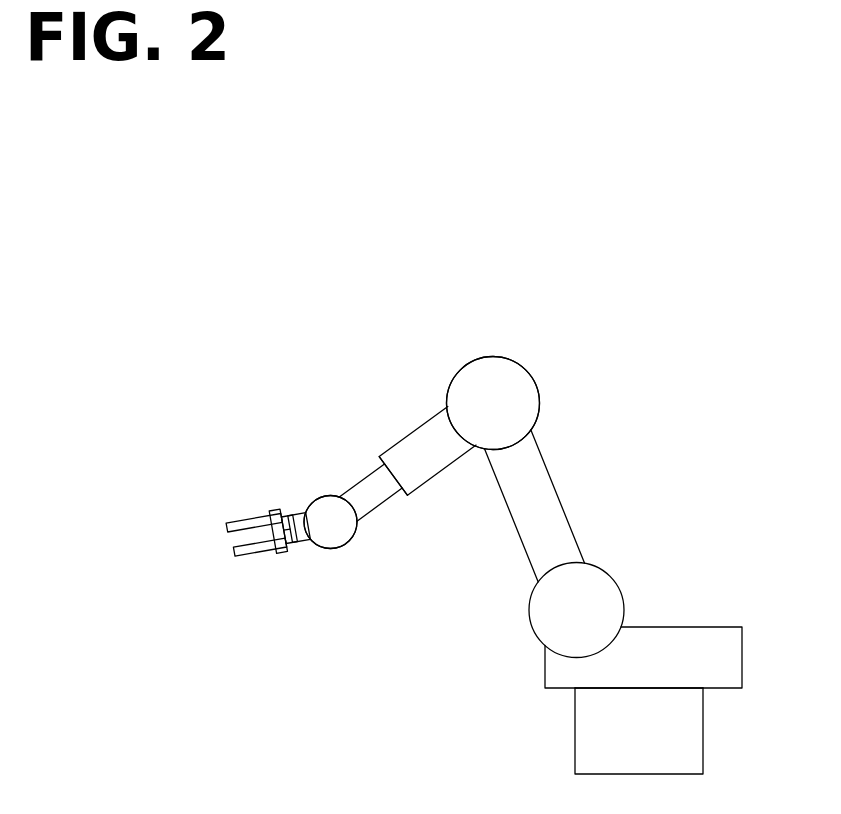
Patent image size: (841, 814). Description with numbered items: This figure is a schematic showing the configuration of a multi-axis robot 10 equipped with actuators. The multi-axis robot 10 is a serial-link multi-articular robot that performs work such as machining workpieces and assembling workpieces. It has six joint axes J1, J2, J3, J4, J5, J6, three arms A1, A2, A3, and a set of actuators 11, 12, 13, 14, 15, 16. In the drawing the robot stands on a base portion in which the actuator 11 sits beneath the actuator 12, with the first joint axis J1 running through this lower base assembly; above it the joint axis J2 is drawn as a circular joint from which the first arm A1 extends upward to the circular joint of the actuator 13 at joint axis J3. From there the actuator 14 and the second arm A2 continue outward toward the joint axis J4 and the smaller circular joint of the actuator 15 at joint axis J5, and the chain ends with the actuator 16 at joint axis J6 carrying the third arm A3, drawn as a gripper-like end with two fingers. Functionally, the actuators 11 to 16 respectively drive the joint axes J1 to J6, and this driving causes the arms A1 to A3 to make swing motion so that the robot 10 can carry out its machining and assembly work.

The multi-axis robot 10 is at (433, 688).
The actuator 11 is at (590, 733).
The actuator 12 is at (534, 625).
The actuator 13 is at (531, 405).
The actuator 14 is at (425, 427).
The actuator 15 is at (332, 495).
The actuator 16 is at (297, 517).
The arm A1 is at (541, 494).
The arm A2 is at (362, 485).
The arm A3 is at (262, 518).
The joint axis J1 is at (643, 688).
The joint axis J2 is at (577, 612).
The joint axis J3 is at (493, 403).
The joint axis J4 is at (383, 480).
The joint axis J5 is at (330, 525).
The joint axis J6 is at (270, 536).